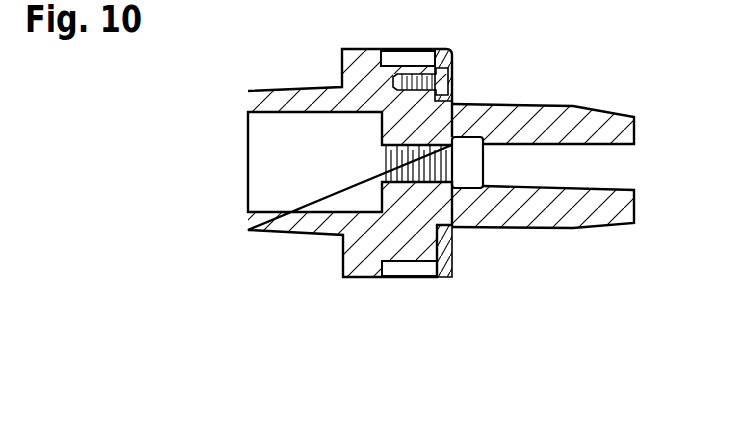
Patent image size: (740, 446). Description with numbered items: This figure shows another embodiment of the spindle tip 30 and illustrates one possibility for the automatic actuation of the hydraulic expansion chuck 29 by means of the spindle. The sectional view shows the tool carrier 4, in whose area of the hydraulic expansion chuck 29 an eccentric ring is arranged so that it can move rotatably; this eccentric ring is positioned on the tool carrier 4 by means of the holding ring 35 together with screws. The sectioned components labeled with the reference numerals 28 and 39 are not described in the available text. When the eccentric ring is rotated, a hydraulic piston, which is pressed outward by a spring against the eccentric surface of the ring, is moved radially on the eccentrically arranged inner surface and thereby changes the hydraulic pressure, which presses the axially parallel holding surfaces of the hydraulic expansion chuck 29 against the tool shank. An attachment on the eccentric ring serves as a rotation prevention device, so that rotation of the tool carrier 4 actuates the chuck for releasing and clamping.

The tool carrier 4 is at (578, 117).
The sleeve insert 28 is at (473, 134).
The hydraulic expansion chuck 29 is at (427, 183).
The spindle tip 30 is at (280, 236).
The holding ring 35 is at (445, 280).
The locking ring with screw 39 is at (449, 81).